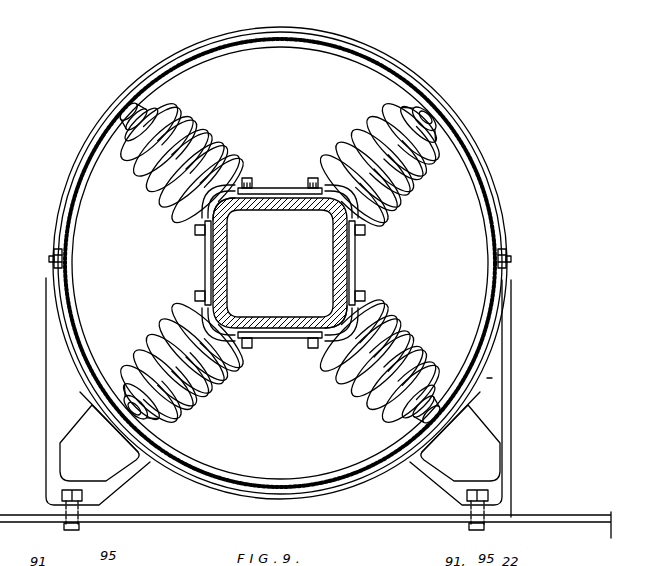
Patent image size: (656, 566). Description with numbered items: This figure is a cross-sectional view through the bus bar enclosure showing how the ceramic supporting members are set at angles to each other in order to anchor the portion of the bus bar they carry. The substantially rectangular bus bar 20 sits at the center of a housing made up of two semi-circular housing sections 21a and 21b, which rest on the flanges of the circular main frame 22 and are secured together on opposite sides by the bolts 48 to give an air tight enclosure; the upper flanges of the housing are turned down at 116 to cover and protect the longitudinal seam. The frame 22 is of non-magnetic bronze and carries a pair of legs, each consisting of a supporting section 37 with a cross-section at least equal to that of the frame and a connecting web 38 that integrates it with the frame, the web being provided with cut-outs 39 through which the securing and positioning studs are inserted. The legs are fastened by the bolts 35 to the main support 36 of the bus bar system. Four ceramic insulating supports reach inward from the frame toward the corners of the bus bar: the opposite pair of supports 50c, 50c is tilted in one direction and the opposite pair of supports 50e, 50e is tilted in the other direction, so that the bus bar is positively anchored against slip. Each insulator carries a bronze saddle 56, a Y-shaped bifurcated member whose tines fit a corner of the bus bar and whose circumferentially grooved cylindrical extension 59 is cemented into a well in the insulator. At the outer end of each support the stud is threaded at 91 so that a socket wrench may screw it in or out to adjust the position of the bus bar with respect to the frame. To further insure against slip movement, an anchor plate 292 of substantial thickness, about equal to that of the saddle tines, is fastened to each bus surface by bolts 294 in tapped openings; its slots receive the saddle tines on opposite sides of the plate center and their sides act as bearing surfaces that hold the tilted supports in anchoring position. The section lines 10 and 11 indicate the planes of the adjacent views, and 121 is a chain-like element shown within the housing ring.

The section line 10- 10 is at (122, 98).
The section line 11- 11 is at (451, 93).
The bus bar 20 is at (346, 264).
The housing section 21a is at (489, 200).
The housing section 21b is at (489, 320).
The main frame 22 is at (375, 49).
The bolt 35 is at (65, 527).
The main frame or support 36 is at (568, 521).
The supporting section 37 is at (509, 410).
The connecting web 38 is at (487, 378).
The cut-out 39 is at (489, 475).
The bolt 48 is at (57, 252).
The insulating support 50c is at (209, 126).
The insulating support 50e is at (392, 211).
The bronze saddle 56 is at (216, 216).
The cylindrical extension 59 is at (194, 216).
The threaded end of stud 91 is at (147, 107).
The turned-down flange 116 is at (52, 263).
The chain 121 is at (284, 40).
The anchor plate 292 is at (274, 194).
The bolt 294 is at (310, 182).